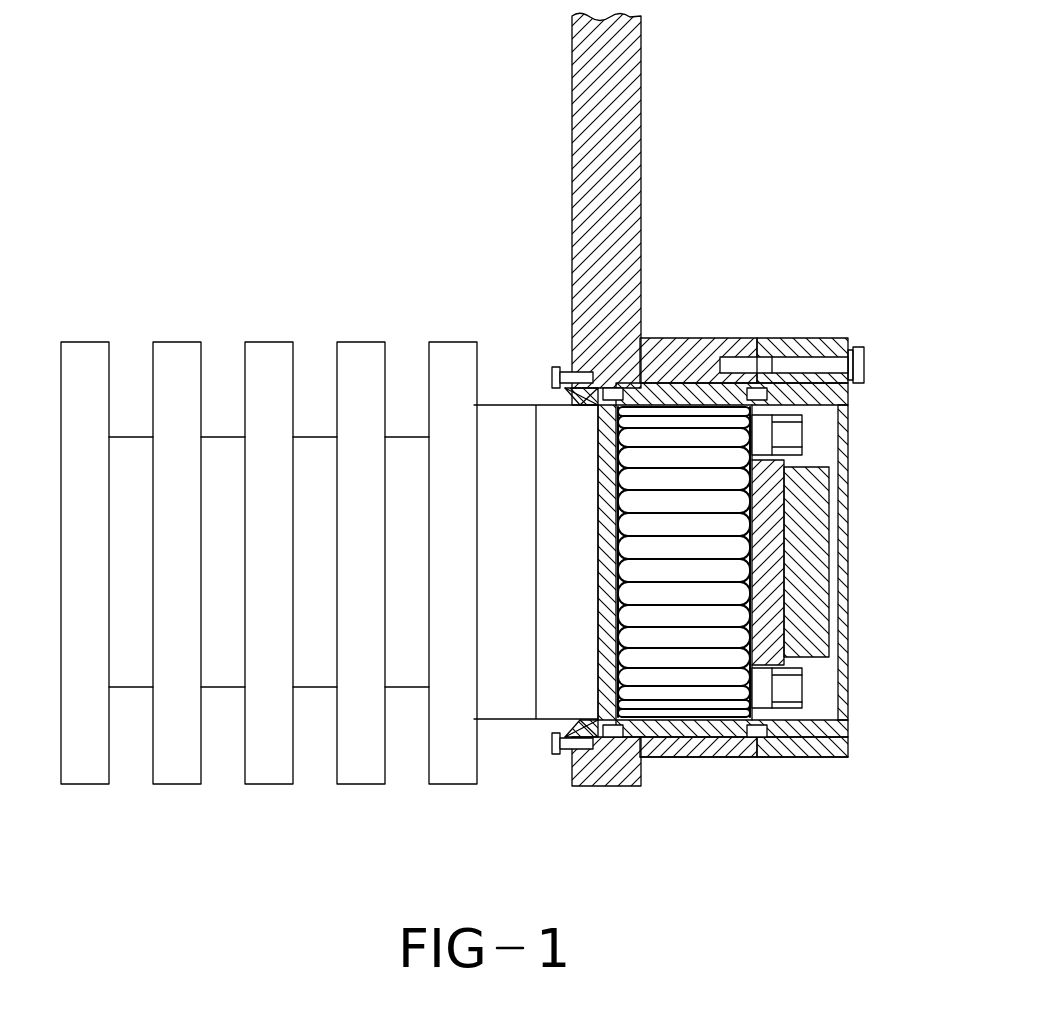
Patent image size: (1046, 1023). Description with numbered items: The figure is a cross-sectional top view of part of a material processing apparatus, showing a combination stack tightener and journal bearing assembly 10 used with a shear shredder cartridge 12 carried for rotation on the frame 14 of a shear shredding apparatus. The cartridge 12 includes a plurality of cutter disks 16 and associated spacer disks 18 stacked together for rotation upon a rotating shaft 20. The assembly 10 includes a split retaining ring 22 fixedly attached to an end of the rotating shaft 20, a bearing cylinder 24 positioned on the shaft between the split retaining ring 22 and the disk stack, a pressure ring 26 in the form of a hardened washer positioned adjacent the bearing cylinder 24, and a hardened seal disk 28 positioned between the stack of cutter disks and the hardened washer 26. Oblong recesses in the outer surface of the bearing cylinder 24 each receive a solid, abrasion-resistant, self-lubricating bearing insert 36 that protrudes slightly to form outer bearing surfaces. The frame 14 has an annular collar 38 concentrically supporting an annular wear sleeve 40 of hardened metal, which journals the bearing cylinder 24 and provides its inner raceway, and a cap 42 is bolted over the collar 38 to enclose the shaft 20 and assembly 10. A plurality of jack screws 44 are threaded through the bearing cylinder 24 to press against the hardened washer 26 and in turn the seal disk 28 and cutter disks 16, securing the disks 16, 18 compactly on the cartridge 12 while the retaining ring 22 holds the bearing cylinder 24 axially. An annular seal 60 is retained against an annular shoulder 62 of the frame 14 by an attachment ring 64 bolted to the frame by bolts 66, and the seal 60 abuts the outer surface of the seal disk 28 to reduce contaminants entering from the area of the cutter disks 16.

The combination stack tightener and journal bearing assembly 10 is at (800, 184).
The shear shredder cartridge 12 is at (304, 219).
The frame 14 is at (618, 94).
The cutter disks 16 is at (90, 349).
The spacer disks 18 is at (138, 677).
The rotating shaft 20 is at (815, 617).
The split retaining ring 22 is at (775, 525).
The bearing cylinder 24 is at (757, 704).
The pressure ring 26 is at (607, 660).
The hardened seal disk 28 is at (585, 576).
The solid bearing insert 36 is at (625, 503).
The annular collar 38 is at (697, 360).
The annular wear sleeve 40 is at (705, 740).
The cap 42 is at (810, 347).
The jack screws 44 is at (790, 441).
The annular seal 60 is at (580, 722).
The annular shoulder 62 is at (600, 395).
The attachment ring 64 is at (585, 400).
The bolts 66 is at (556, 372).